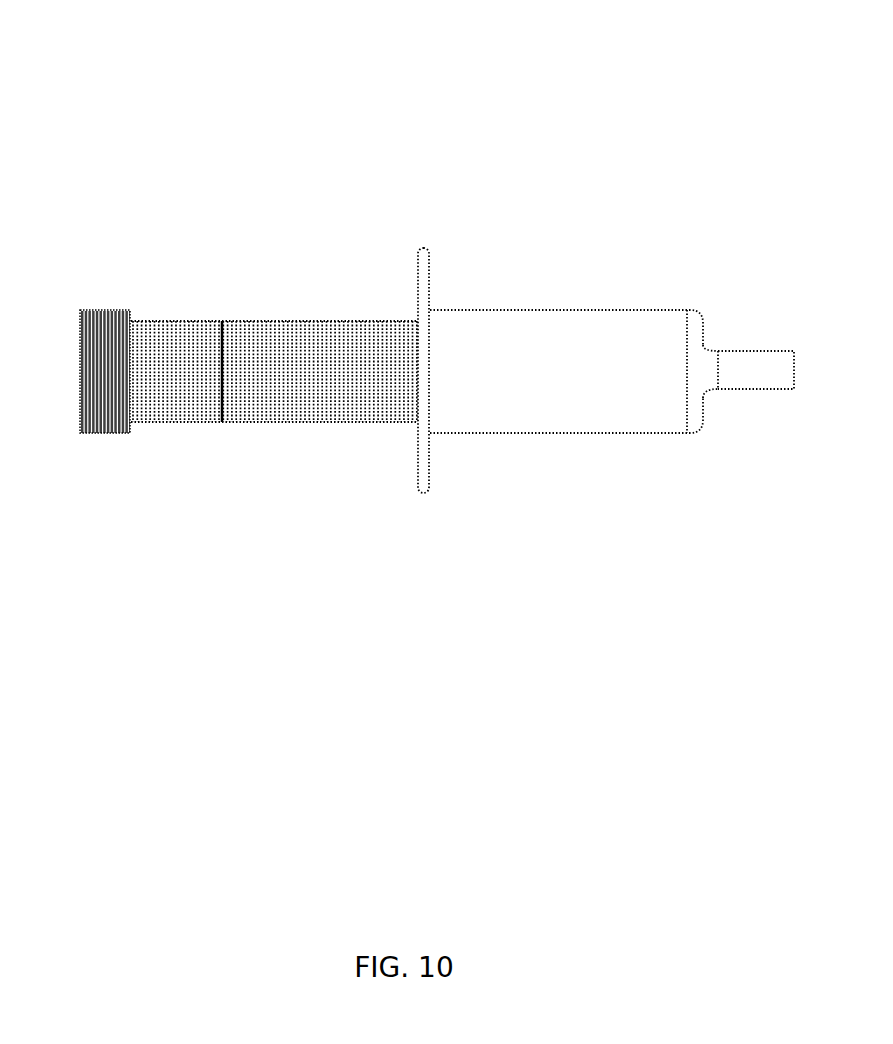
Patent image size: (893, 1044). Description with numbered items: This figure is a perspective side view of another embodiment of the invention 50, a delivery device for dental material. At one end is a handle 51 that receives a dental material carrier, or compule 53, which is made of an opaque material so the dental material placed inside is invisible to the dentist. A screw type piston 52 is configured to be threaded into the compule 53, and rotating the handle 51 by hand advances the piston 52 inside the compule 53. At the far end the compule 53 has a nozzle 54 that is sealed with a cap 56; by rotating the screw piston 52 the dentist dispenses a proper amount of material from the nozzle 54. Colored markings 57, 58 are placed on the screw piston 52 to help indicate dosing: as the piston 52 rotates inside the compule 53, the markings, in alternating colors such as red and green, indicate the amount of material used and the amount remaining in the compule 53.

The delivery device embodiment 50 is at (676, 129).
The handle 51 is at (95, 309).
The screw type piston 52 is at (268, 412).
The dental material carrier (compule) 53 is at (553, 325).
The nozzle 54 is at (718, 389).
The cap 56 is at (773, 351).
The colored marking 57 is at (176, 335).
The colored marking 58 is at (305, 340).